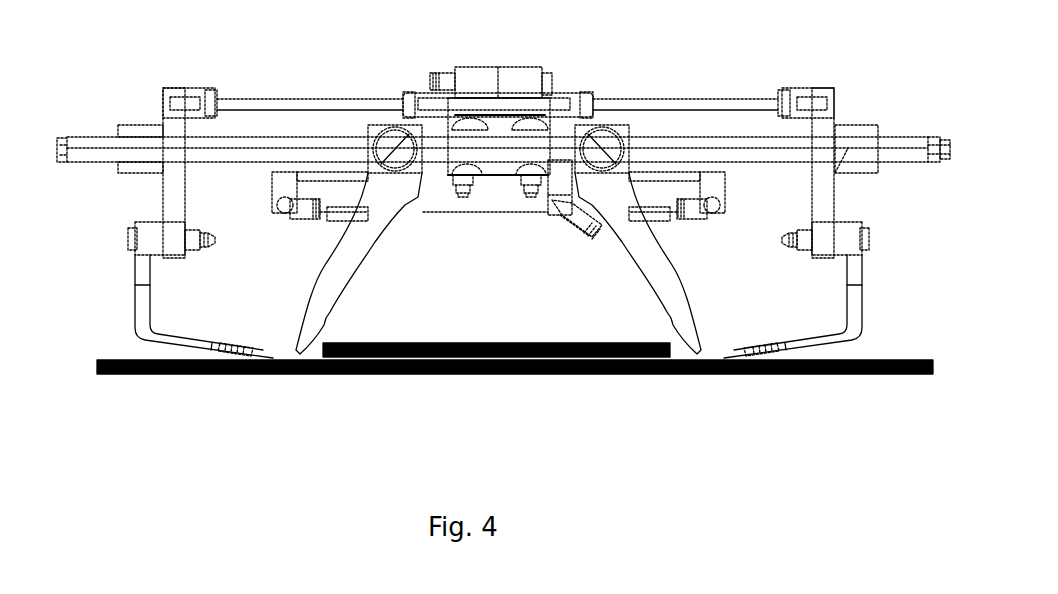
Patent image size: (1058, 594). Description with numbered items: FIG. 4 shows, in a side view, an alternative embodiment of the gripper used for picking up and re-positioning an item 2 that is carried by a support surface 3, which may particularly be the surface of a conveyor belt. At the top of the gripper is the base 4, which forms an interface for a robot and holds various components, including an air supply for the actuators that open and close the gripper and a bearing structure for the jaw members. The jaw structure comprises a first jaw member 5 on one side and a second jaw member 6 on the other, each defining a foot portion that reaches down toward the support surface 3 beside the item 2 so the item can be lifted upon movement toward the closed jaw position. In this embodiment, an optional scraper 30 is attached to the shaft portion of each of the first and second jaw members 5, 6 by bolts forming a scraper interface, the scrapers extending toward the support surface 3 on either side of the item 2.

The item 2 is at (525, 343).
The support surface 3 is at (875, 360).
The base 4 is at (545, 73).
The first jaw member 5 is at (163, 188).
The second jaw member 6 is at (837, 212).
The scraper 30 is at (273, 358).